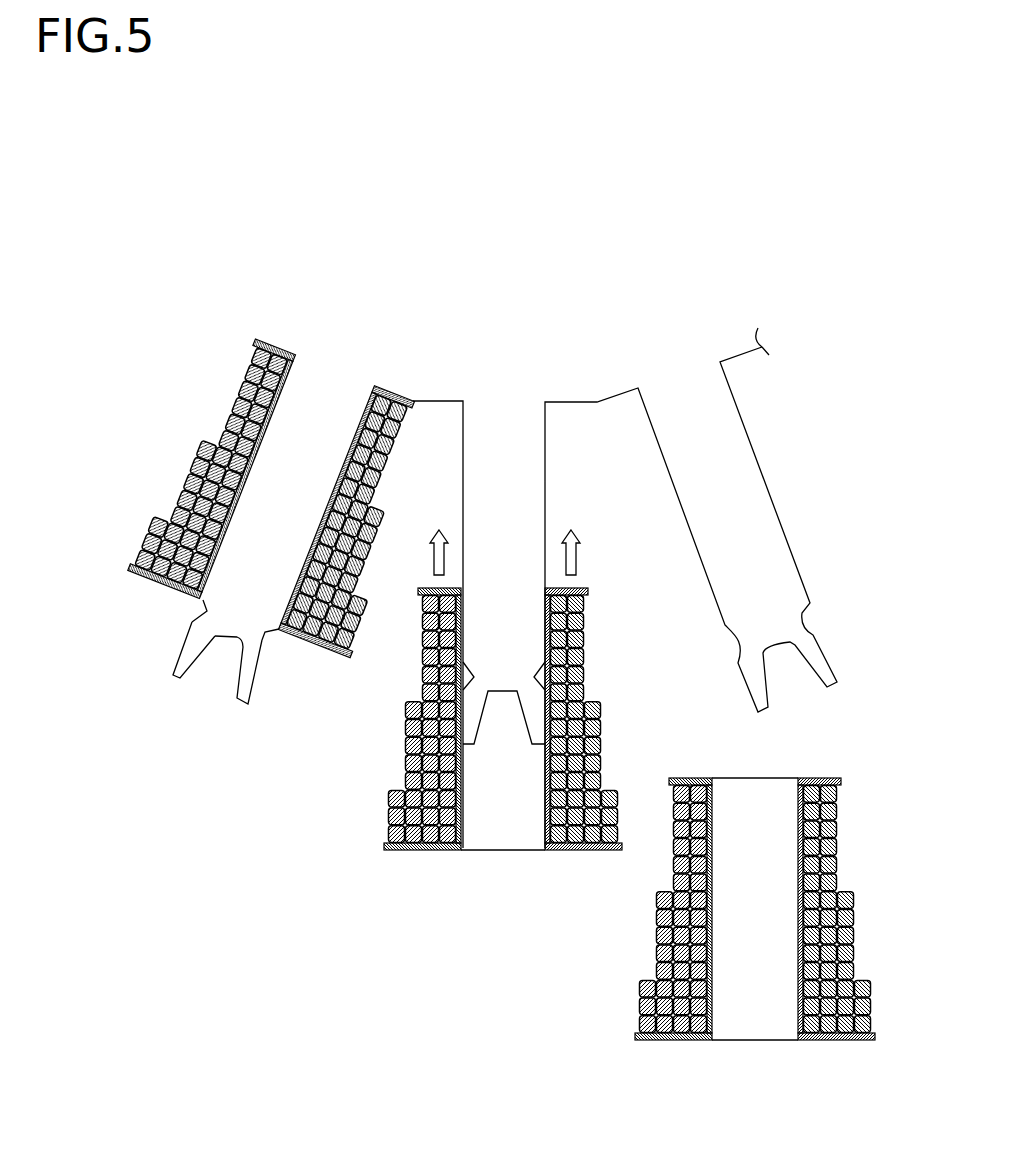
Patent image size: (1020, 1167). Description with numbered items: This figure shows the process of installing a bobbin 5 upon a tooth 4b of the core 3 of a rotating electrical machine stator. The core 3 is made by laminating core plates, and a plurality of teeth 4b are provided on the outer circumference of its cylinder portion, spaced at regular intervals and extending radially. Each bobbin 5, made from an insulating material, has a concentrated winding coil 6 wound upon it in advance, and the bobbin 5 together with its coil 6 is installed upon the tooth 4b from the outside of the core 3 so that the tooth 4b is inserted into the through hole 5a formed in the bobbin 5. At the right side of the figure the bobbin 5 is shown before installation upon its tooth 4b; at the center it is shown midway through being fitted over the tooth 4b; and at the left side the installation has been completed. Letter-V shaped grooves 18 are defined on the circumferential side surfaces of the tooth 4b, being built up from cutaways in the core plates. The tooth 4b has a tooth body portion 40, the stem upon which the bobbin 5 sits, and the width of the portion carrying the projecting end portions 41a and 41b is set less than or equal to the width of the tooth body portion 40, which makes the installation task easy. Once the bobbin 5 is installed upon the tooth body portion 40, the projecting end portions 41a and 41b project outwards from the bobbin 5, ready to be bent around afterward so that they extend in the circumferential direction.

The core 3 is at (445, 367).
The tooth 4b is at (273, 460).
The bobbin 5 is at (428, 850).
The through hole 5a is at (507, 837).
The concentrated winding coil 6 is at (190, 470).
The letter-V shaped groove 18 is at (205, 610).
The tooth body portion 40 is at (237, 617).
The projecting end portion 41a is at (170, 676).
The projecting end portion 41b is at (248, 705).